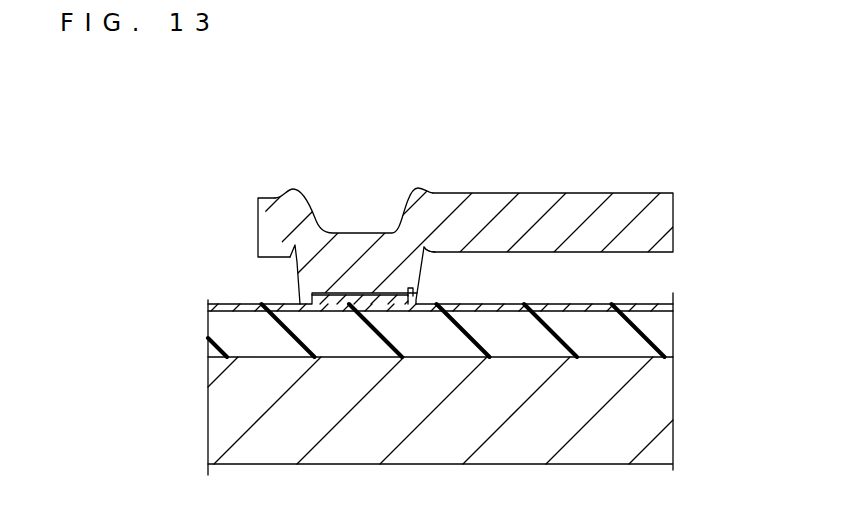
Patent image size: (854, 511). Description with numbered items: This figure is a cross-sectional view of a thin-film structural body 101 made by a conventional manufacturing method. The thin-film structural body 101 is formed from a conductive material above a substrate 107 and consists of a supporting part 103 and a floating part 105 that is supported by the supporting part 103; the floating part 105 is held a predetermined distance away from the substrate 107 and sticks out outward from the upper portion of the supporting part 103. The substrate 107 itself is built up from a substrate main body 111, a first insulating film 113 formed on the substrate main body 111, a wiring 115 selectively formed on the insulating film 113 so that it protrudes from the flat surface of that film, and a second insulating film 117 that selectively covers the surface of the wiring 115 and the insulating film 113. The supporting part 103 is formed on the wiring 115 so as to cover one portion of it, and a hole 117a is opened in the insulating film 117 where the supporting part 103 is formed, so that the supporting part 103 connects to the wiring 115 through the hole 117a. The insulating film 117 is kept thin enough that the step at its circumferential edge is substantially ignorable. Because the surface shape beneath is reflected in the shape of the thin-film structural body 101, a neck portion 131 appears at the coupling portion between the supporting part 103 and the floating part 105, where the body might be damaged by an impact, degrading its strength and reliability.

The thin-film structural body 101 is at (249, 227).
The supporting part 103 is at (342, 231).
The floating part 105 is at (550, 192).
The substrate 107 is at (200, 332).
The substrate main body 111 is at (673, 401).
The first insulating film 113 is at (673, 330).
The wiring 115 is at (360, 290).
The second insulating film 117 is at (673, 300).
The hole 117a is at (408, 286).
The neck portion 131 is at (425, 250).